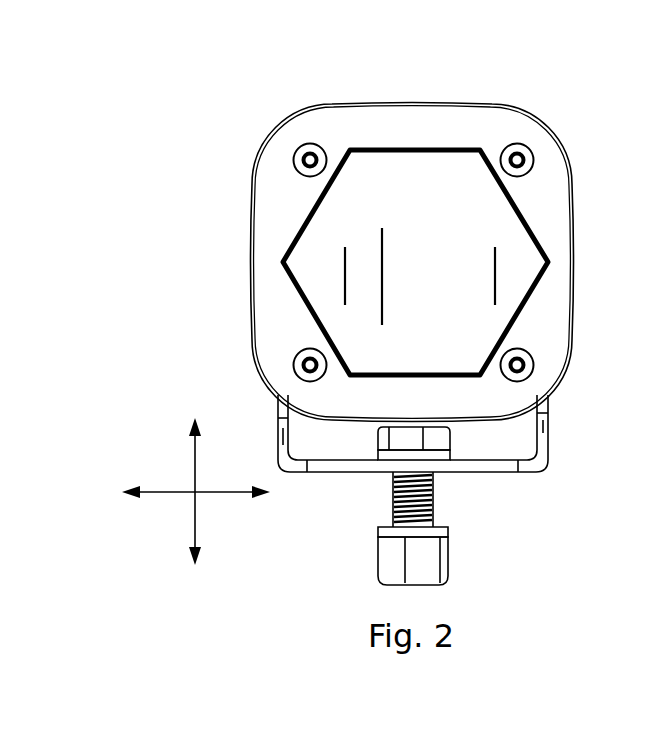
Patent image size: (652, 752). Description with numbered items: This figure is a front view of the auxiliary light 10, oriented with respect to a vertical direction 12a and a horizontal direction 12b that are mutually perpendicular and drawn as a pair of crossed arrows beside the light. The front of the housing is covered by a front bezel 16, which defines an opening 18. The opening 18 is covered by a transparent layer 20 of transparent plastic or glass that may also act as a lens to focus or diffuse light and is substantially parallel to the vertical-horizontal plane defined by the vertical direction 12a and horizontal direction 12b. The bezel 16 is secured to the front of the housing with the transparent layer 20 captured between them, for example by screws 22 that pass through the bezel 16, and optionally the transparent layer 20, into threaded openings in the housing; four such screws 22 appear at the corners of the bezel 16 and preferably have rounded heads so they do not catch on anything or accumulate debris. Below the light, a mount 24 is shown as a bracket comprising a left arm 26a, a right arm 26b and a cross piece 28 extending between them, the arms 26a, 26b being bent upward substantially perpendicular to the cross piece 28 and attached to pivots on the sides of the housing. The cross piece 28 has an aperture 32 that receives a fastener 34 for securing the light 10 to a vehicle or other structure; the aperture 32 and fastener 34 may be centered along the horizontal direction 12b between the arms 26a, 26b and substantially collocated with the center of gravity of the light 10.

The auxiliary light 10 is at (203, 202).
The vertical direction 12a is at (192, 510).
The horizontal direction 12b is at (175, 492).
The front bezel 16 is at (268, 258).
The opening 18 is at (447, 372).
The transparent layer 20 is at (452, 218).
The screws 22 is at (308, 143).
The mount 24 is at (484, 498).
The left arm 26a is at (544, 427).
The right arm 26b is at (283, 447).
The cross piece 28 is at (500, 474).
The aperture 32 is at (392, 482).
The fastener 34 is at (437, 550).